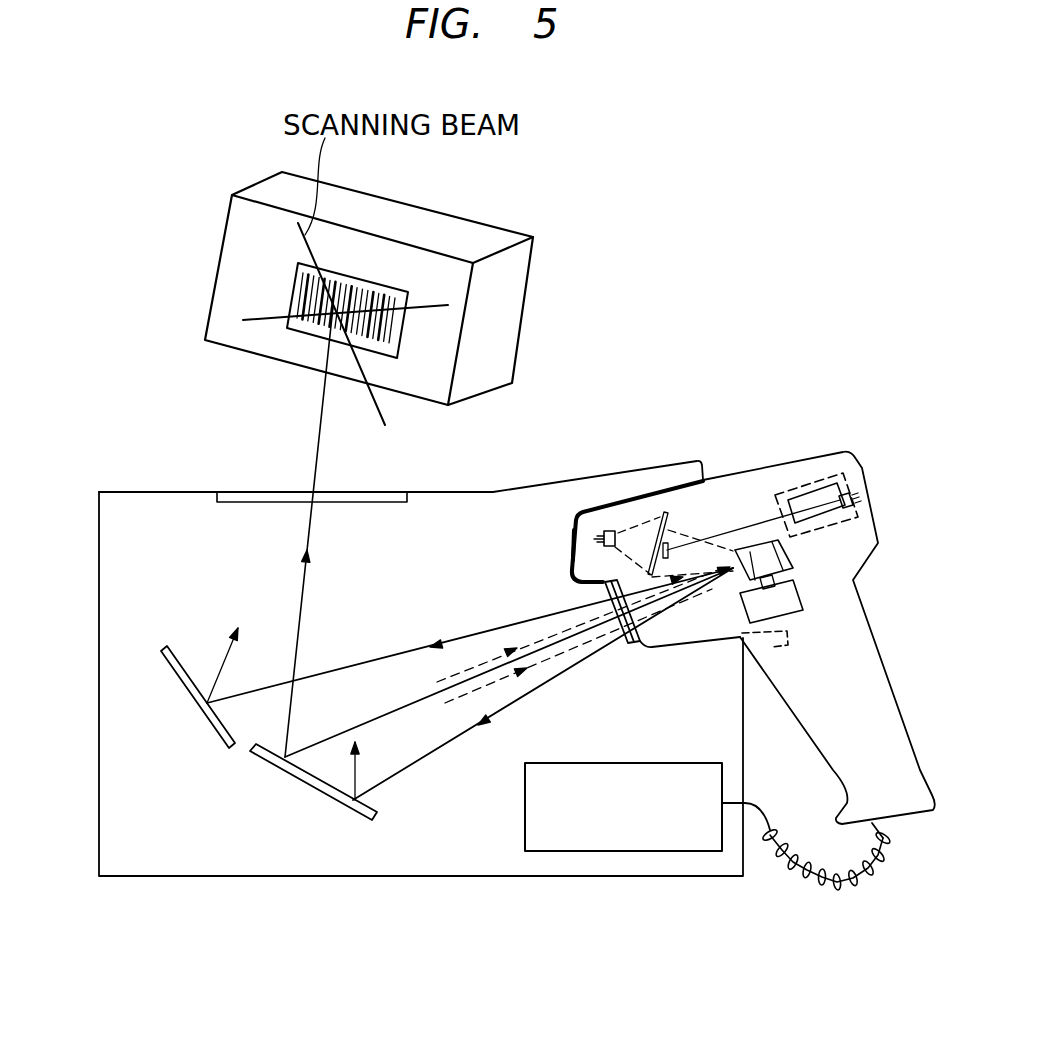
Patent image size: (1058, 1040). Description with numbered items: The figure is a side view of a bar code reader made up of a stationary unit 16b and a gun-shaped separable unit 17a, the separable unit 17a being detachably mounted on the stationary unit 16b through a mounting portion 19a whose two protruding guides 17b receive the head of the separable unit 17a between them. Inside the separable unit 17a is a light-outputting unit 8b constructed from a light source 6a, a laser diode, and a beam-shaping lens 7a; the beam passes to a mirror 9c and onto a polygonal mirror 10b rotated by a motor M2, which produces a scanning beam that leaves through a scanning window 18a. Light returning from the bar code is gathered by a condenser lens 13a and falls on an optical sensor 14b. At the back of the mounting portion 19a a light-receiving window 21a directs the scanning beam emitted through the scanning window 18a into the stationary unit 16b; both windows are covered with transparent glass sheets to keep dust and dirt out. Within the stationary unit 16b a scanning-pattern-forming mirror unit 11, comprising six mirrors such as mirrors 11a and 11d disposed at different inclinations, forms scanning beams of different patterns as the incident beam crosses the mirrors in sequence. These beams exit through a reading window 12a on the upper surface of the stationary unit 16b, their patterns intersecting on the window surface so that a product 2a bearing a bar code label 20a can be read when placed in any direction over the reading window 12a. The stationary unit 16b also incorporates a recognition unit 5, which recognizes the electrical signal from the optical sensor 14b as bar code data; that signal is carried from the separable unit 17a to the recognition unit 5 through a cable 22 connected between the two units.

The product 2a is at (458, 227).
The bar code label 20a is at (393, 330).
The stationary unit 16b is at (163, 490).
The reading window 12a is at (367, 490).
The separable unit 17a is at (878, 657).
The protruding guides 17b is at (770, 650).
The scanning window 18a is at (640, 638).
The light-receiving window 21a is at (603, 596).
The optical sensor 14b is at (615, 530).
The condenser lens 13a is at (660, 520).
The mirror 9c is at (670, 547).
The light source 6a is at (849, 498).
The beam-shaping lens 7a is at (813, 490).
The light-outputting unit 8b is at (782, 492).
The polygonal mirror 10b is at (792, 547).
The motor M2 is at (800, 610).
The mounting portion 19a is at (573, 547).
The scanning-pattern-forming mirror unit 11 is at (181, 645).
The mirrors 11d is at (178, 688).
The mirrors 11a is at (307, 787).
The recognition unit 5 is at (525, 826).
The cable 22 is at (833, 895).